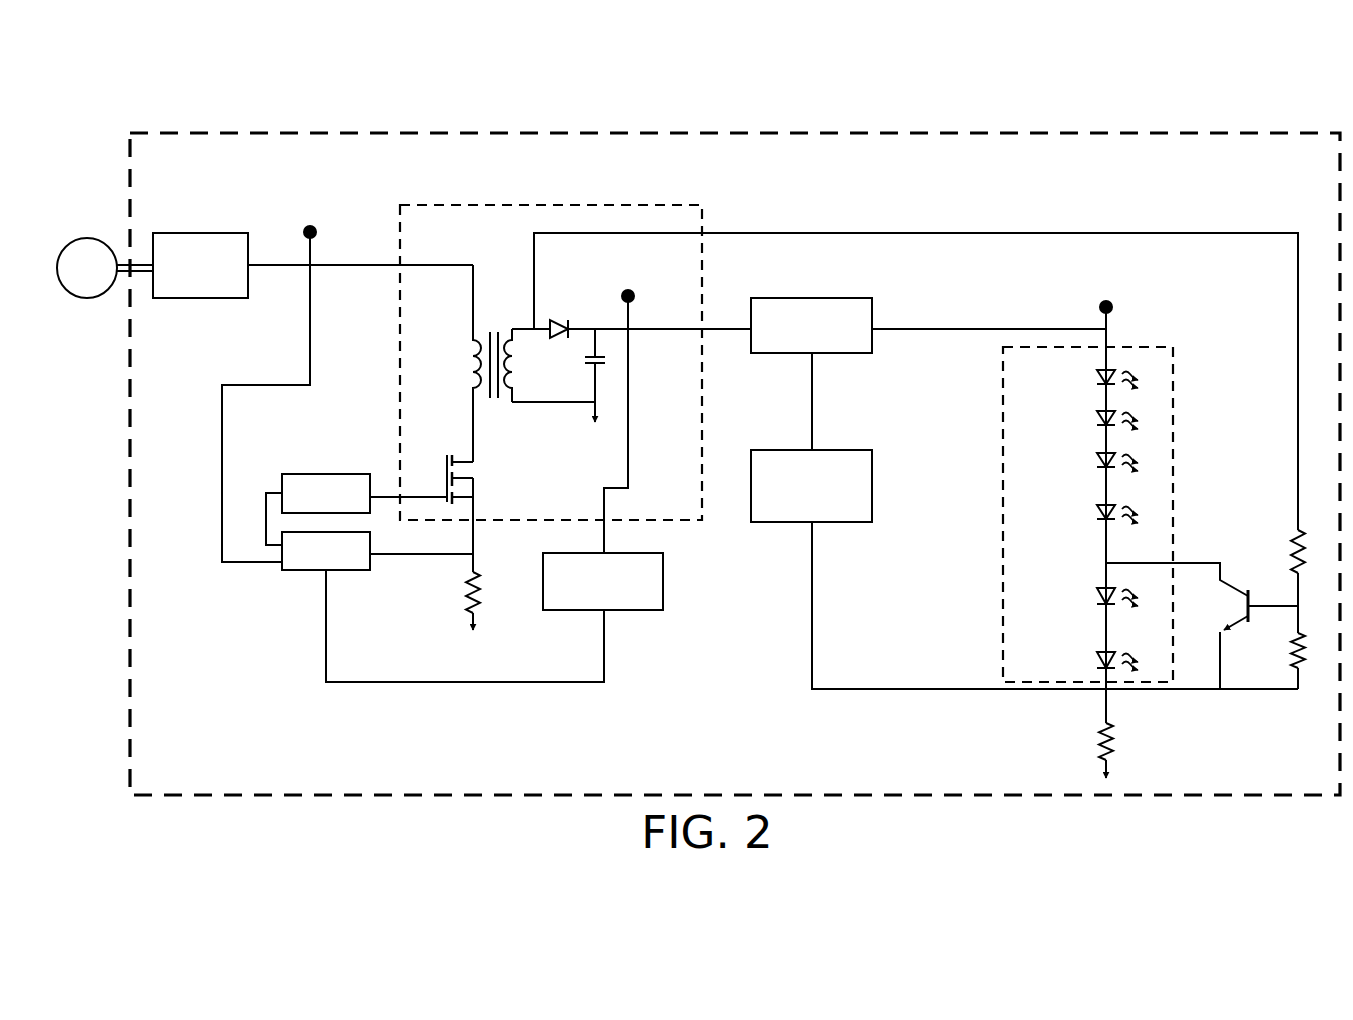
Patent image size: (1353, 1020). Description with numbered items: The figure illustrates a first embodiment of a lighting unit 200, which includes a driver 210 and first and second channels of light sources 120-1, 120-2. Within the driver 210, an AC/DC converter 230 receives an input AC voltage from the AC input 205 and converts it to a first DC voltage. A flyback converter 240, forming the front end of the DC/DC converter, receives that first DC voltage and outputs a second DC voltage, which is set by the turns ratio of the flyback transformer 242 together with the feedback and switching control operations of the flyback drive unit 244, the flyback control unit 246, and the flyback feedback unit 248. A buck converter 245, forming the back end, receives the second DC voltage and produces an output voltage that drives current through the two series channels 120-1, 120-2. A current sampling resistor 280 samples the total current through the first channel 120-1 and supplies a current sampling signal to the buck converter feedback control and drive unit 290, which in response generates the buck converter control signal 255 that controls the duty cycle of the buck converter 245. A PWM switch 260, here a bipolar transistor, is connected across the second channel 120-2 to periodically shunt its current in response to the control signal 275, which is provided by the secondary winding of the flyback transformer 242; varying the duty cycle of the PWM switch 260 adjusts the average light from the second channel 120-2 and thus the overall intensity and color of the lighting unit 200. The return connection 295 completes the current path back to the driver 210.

The lighting unit 200 is at (1338, 73).
The AC input 205 is at (87, 238).
The driver 210 is at (663, 133).
The AC/DC converter 230 is at (200, 233).
The flyback converter 240 is at (540, 205).
The flyback transformer 242 is at (504, 414).
The flyback drive unit 244 is at (330, 474).
The buck converter 245 is at (773, 355).
The flyback control unit 246 is at (295, 572).
The flyback feedback unit 248 is at (640, 610).
The buck converter control signal 255 is at (812, 405).
The PWM switch 260 is at (1243, 563).
The control signal 275 is at (980, 233).
The current sampling resistor 280 is at (1090, 738).
The buck converter feedback control and drive unit 290 is at (872, 482).
The return line 295 is at (908, 689).
The first channel of light sources 120-1 is at (1088, 528).
The second channel of light sources 120-2 is at (1088, 675).